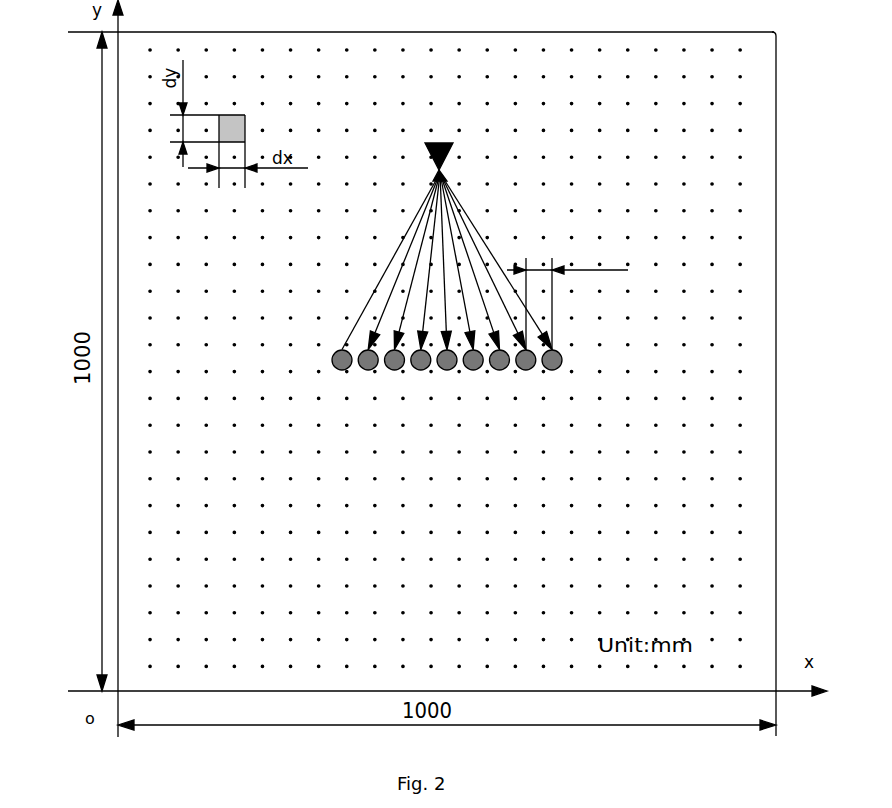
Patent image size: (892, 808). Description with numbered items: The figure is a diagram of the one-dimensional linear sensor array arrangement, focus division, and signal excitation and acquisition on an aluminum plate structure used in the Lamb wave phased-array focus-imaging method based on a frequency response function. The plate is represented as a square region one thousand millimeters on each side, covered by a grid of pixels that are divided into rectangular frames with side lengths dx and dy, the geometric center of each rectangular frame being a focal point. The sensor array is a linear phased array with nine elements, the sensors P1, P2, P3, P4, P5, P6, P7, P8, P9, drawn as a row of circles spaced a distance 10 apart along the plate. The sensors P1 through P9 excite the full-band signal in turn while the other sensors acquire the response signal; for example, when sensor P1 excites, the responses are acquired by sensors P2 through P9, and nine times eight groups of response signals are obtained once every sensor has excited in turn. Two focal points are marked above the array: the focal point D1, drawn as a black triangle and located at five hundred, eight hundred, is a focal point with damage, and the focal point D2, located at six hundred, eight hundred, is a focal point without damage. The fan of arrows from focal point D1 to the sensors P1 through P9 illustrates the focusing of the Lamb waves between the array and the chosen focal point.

The spacing between adjacent measurement points (10 mm) 10 is at (567, 295).
The focal point with damage D1 is at (475, 147).
The focal point without damage D2 is at (554, 150).
The sensor P1 is at (342, 381).
The sensor P2 is at (368, 381).
The sensor P3 is at (394, 381).
The sensor P4 is at (421, 381).
The sensor P5 is at (447, 381).
The sensor P6 is at (473, 381).
The sensor P7 is at (499, 381).
The sensor P8 is at (526, 381).
The sensor P9 is at (552, 381).